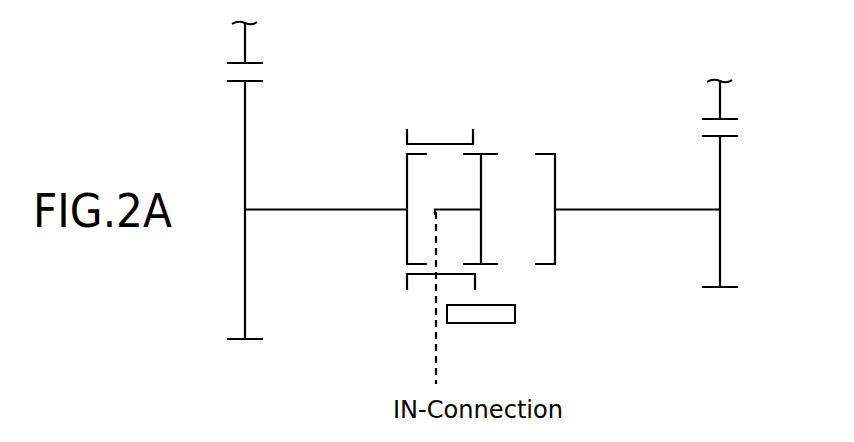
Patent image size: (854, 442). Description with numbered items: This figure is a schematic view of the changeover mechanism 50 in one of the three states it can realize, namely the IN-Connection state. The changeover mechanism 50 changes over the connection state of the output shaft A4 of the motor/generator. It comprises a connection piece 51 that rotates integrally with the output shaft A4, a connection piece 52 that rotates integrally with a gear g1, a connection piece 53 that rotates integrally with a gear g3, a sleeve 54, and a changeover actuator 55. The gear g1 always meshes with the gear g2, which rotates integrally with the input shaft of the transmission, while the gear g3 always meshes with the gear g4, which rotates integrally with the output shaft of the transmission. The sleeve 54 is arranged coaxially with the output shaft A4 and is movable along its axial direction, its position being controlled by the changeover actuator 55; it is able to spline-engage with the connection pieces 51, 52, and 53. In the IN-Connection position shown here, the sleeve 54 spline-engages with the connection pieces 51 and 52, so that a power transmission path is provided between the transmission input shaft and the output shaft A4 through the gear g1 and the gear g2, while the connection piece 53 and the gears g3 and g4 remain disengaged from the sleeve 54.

The gear g1 is at (247, 285).
The gear g2 is at (247, 42).
The gear g3 is at (722, 247).
The gear g4 is at (722, 100).
The changeover mechanism 50 is at (480, 252).
The connection piece 51 is at (482, 180).
The connection piece 52 is at (406, 243).
The connection piece 53 is at (557, 243).
The sleeve 54 is at (475, 138).
The changeover actuator 55 is at (478, 325).
The output shaft A4 is at (442, 206).